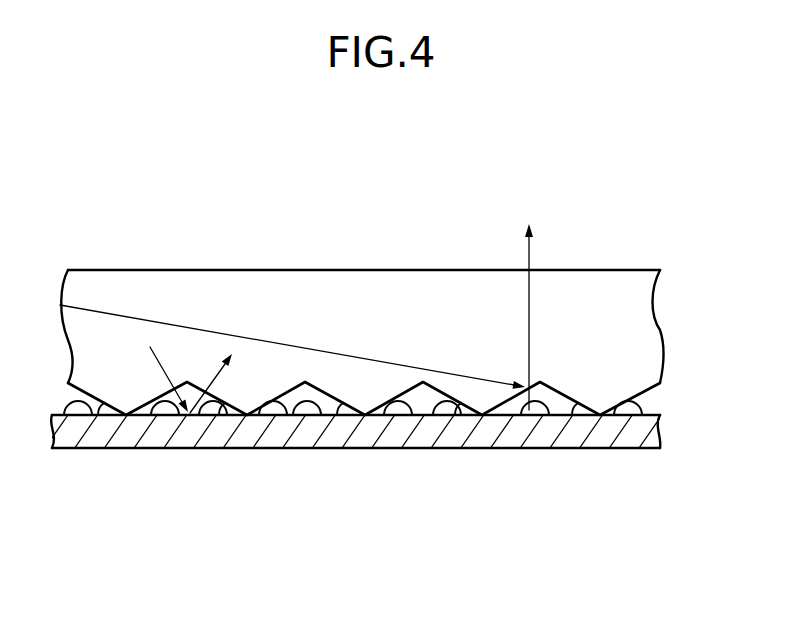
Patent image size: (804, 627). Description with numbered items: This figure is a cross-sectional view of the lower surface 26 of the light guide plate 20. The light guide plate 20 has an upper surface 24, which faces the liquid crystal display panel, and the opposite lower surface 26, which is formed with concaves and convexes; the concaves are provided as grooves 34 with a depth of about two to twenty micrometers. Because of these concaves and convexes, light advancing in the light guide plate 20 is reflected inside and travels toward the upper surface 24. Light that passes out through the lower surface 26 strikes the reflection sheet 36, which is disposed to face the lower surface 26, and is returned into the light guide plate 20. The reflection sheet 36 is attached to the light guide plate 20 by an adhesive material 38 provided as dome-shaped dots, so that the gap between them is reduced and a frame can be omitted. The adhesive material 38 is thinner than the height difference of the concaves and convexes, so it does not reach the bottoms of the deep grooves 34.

The light guide plate 20 is at (395, 361).
The upper surface 24 is at (319, 270).
The lower surface 26 is at (472, 410).
The grooves 34 is at (423, 400).
The reflection sheet 36 is at (600, 448).
The adhesive material 38 is at (270, 413).